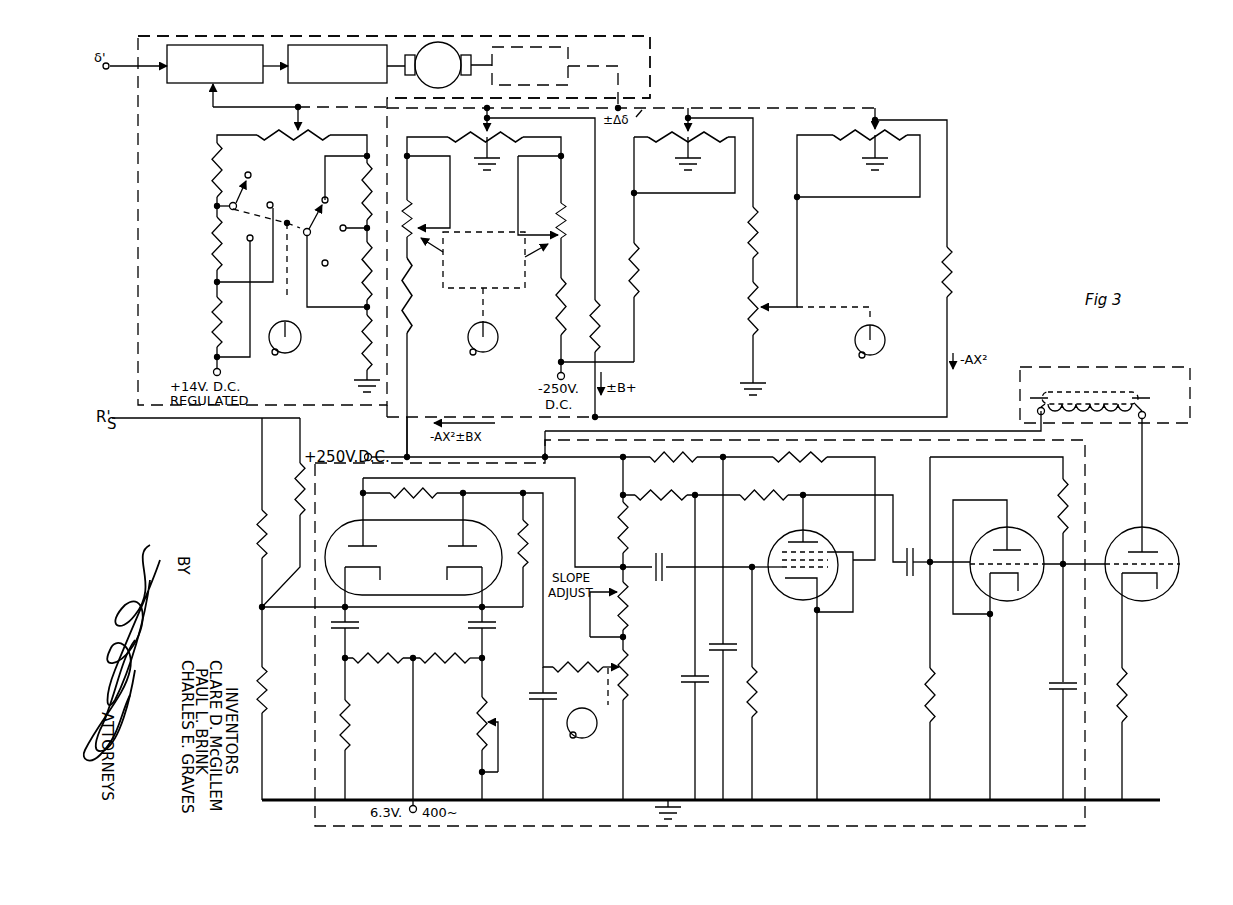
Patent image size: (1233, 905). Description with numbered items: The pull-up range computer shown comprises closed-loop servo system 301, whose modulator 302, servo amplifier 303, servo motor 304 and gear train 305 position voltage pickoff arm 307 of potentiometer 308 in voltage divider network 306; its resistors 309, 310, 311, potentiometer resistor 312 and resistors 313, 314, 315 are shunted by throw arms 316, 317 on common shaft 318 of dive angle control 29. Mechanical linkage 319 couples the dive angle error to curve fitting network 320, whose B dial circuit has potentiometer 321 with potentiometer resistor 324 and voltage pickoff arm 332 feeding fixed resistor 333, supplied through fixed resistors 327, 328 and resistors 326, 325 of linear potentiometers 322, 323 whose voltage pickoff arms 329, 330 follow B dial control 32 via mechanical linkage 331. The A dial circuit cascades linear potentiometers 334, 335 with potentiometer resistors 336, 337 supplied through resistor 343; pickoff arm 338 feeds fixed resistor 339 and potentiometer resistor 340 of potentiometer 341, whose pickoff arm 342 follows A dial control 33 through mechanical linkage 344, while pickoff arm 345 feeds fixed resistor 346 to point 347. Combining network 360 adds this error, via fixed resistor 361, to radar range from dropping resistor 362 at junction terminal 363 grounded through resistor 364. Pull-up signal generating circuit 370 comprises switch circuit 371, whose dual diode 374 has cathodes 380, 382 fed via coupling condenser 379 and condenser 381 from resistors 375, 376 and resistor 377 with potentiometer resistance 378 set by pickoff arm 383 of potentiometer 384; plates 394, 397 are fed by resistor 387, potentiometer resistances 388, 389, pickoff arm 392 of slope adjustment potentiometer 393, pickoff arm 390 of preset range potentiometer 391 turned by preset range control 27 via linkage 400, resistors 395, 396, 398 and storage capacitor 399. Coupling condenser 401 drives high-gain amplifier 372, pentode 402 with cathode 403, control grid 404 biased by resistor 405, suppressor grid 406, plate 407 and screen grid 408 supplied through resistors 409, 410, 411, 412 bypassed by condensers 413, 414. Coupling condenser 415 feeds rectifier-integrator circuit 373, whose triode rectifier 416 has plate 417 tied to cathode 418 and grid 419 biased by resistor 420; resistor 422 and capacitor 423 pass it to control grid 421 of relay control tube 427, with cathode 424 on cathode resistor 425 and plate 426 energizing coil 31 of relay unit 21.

The relay unit 21 is at (1045, 368).
The preset range control 27 is at (567, 717).
The dive angle control 29 is at (301, 332).
The coil 31 is at (1077, 391).
The B dial control 32 is at (494, 340).
The A dial control 33 is at (884, 338).
The closed-loop servo system 301 is at (650, 71).
The modulator 302 is at (232, 84).
The servo amplifier 303 is at (328, 84).
The servo motor 304 is at (421, 81).
The gear train 305 is at (566, 65).
The voltage divider network 306 is at (300, 189).
The voltage pickoff arm 307 is at (292, 118).
The potentiometer 308 is at (306, 130).
The resistor 309 is at (211, 318).
The resistor 310 is at (211, 255).
The resistor 311 is at (211, 178).
The potentiometer resistor 312 is at (302, 137).
The resistor 313 is at (365, 181).
The resistor 314 is at (359, 272).
The resistor 315 is at (359, 344).
The throw arm 316 is at (336, 246).
The throw arm 317 is at (241, 196).
The common shaft 318 is at (287, 293).
The mechanical linkage 319 is at (426, 112).
The curve fitting network 320 is at (678, 397).
The potentiometer 321 is at (480, 128).
The linear potentiometer 322 is at (473, 260).
The linear potentiometer 323 is at (522, 257).
The potentiometer resistor 324 is at (496, 139).
The resistor 325 is at (562, 210).
The resistor 326 is at (412, 214).
The fixed resistor 327 is at (413, 318).
The fixed resistor 328 is at (555, 309).
The voltage pickoff arm 329 is at (452, 230).
The voltage pickoff arm 330 is at (522, 197).
The mechanical linkage 331 is at (485, 293).
The voltage pickoff arm 332 is at (499, 119).
The fixed resistor 333 is at (602, 336).
The linear potentiometer 334 is at (683, 131).
The linear potentiometer 335 is at (869, 126).
The potentiometer resistor 336 is at (694, 139).
The potentiometer resistor 337 is at (880, 141).
The pickoff arm 338 is at (698, 119).
The fixed resistor 339 is at (748, 224).
The potentiometer resistor 340 is at (748, 306).
The potentiometer 341 is at (759, 300).
The pickoff arm 342 is at (780, 308).
The resistor 343 is at (640, 263).
The mechanical linkage 344 is at (839, 302).
The pickoff arm 345 is at (880, 120).
The fixed resistor 346 is at (951, 273).
The point 347 is at (600, 417).
The combining network 360 is at (302, 633).
The fixed resistor 361 is at (297, 466).
The dropping resistor 362 is at (258, 518).
The junction terminal 363 is at (259, 608).
The resistor 364 is at (258, 675).
The pull-up signal generating circuit 370 is at (978, 440).
The switch circuit 371 is at (419, 631).
The high-gain amplifier 372 is at (799, 630).
The rectifier-integrator circuit 373 is at (1023, 644).
The dual diode 374 is at (500, 529).
The resistor 375 is at (349, 721).
The resistor 376 is at (372, 660).
The resistor 377 is at (437, 660).
The potentiometer resistance 378 is at (474, 722).
The coupling condenser 379 is at (348, 633).
The cathode 380 is at (382, 584).
The condenser 381 is at (473, 634).
The cathode 382 is at (447, 584).
The pickoff arm 383 is at (489, 720).
The potentiometer 384 is at (497, 698).
The resistor 387 is at (630, 530).
The potentiometer resistance 388 is at (630, 604).
The potentiometer resistance 389 is at (629, 670).
The pickoff arm 390 is at (601, 661).
The preset range potentiometer 391 is at (608, 664).
The pickoff arm 392 is at (606, 614).
The slope adjustment potentiometer 393 is at (618, 591).
The plate 394 is at (462, 531).
The resistor 395 is at (590, 672).
The resistor 396 is at (523, 525).
The plate 397 is at (366, 532).
The resistor 398 is at (397, 498).
The storage capacitor 399 is at (536, 690).
The linkage 400 is at (612, 706).
The coupling condenser 401 is at (663, 556).
The pentode 402 is at (834, 540).
The cathode 403 is at (789, 586).
The control grid 404 is at (823, 589).
The resistor 405 is at (759, 685).
The suppressor grid 406 is at (780, 553).
The plate 407 is at (790, 541).
The screen grid 408 is at (772, 566).
The resistor 409 is at (772, 498).
The resistor 410 is at (676, 498).
The resistor 411 is at (796, 463).
The resistor 412 is at (668, 462).
The condenser 413 is at (688, 684).
The condenser 414 is at (727, 645).
The coupling condenser 415 is at (905, 575).
The triode rectifier 416 is at (990, 541).
The plate 417 is at (1009, 540).
The cathode 418 is at (1020, 593).
The grid 419 is at (1024, 553).
The resistor 420 is at (924, 679).
The control grid 421 is at (1172, 563).
The resistor 422 is at (1061, 499).
The capacitor 423 is at (1056, 684).
The cathode 424 is at (1165, 590).
The cathode resistor 425 is at (1128, 681).
The plate 426 is at (1158, 547).
The relay control tube 427 is at (1122, 539).